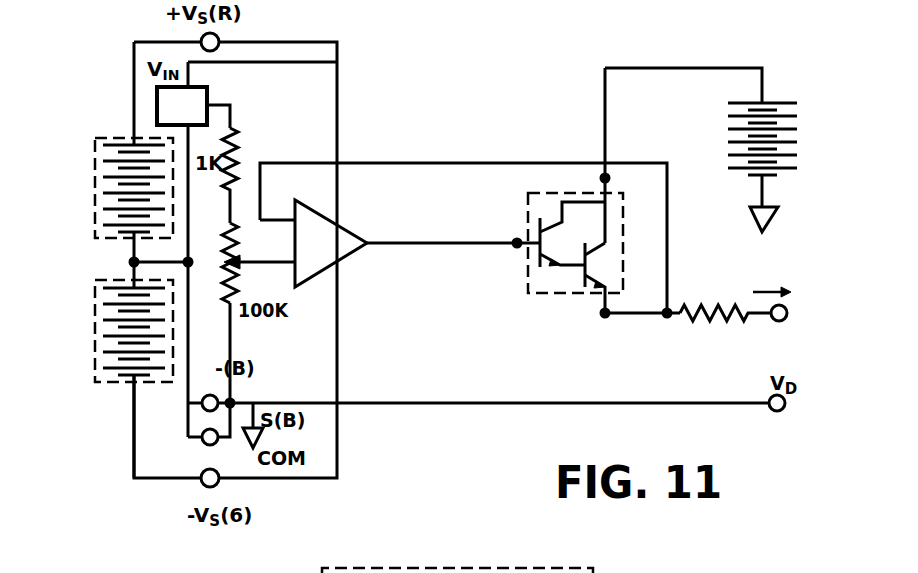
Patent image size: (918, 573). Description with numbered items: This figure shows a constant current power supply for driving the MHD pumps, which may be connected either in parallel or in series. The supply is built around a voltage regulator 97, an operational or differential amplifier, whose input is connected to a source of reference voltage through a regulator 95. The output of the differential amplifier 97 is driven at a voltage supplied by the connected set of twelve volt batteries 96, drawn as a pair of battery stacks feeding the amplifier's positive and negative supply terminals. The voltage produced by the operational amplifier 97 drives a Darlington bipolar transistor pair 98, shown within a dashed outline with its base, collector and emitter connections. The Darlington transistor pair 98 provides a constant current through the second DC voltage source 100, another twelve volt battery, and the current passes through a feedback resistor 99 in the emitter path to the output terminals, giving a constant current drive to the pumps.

The regulator 95 is at (208, 92).
The set of 12 volt batteries 96 is at (82, 267).
The voltage regulator 97 is at (345, 263).
The Darlington bipolar transistor pair 98 is at (530, 189).
The feedback resistor RF 99 is at (724, 262).
The second DC voltage source 100 is at (860, 144).